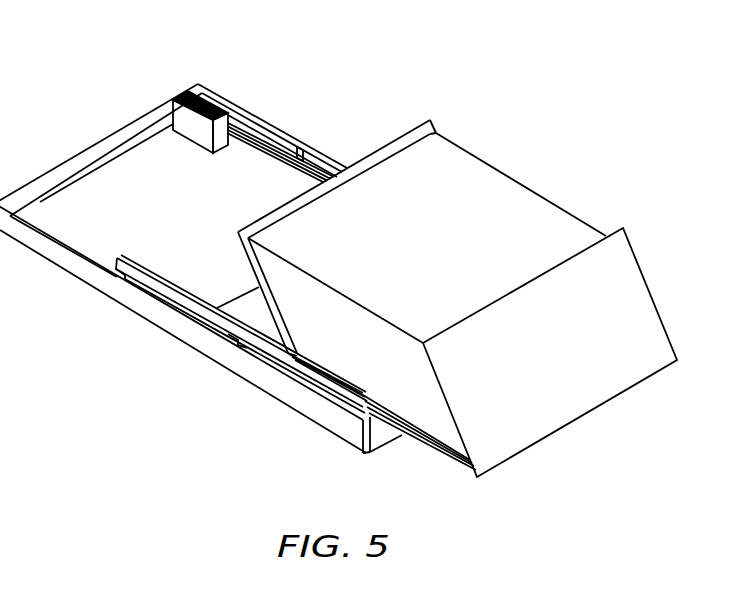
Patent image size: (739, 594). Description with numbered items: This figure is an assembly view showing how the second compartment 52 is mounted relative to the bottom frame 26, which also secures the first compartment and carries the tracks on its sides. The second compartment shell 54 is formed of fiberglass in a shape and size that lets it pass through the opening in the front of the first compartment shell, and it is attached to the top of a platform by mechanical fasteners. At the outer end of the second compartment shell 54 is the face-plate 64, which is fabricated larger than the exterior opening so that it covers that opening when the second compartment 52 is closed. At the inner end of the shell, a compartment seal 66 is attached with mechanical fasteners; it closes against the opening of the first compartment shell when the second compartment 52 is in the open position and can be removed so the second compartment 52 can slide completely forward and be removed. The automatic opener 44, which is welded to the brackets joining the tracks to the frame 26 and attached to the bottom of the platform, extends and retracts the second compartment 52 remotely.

The bottom frame 26 is at (85, 147).
The automatic opener 44 is at (213, 100).
The second compartment 52 is at (518, 182).
The second compartment shell 54 is at (322, 277).
The face-plate 64 is at (650, 290).
The compartment seal 66 is at (258, 218).